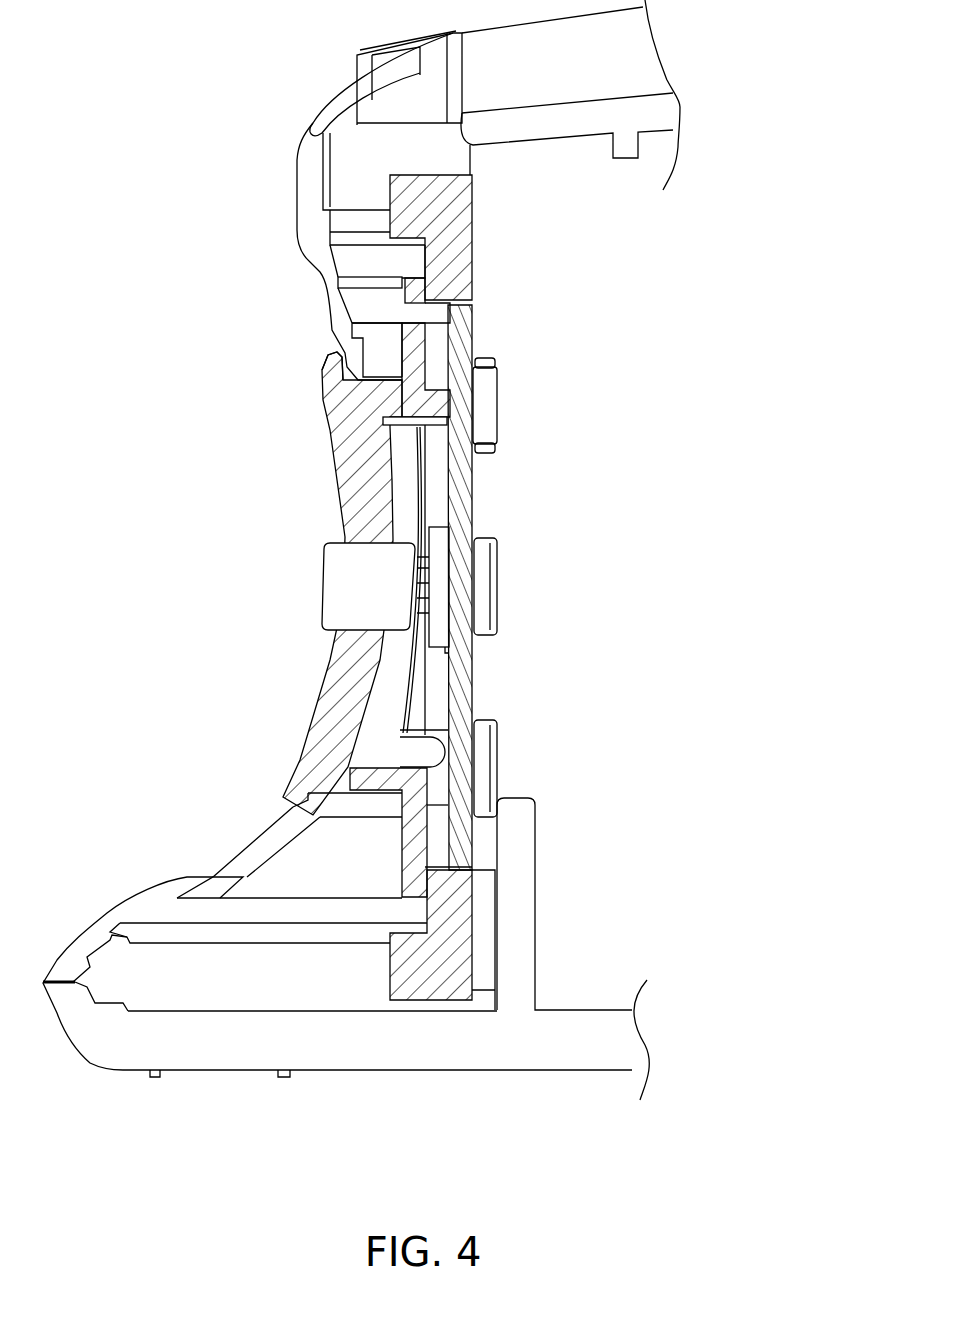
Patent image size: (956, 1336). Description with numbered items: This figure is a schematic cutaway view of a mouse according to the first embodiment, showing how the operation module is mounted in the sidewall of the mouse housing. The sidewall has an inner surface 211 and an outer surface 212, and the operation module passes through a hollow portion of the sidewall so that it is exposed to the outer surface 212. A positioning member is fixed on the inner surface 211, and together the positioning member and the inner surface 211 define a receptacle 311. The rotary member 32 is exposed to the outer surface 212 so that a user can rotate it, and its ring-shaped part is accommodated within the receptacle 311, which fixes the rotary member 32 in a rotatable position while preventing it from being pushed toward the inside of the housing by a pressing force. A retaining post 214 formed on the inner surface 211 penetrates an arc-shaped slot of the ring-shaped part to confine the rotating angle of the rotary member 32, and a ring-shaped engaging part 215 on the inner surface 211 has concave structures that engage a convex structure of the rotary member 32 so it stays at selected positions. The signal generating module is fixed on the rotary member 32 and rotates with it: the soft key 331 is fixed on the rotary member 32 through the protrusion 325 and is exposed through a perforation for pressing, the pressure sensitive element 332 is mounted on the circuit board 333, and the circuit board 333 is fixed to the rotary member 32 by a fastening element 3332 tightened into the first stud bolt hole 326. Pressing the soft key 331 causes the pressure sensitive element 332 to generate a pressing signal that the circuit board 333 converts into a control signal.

The inner surface 211 is at (370, 133).
The outer surface 212 is at (302, 252).
The retaining post 214 is at (415, 320).
The ring-shaped engaging part 215 is at (415, 253).
The receptacle 311 is at (383, 343).
The rotary member 32 is at (355, 468).
The protrusion 325 is at (418, 745).
The first stud bolt hole 326 is at (433, 792).
The soft key 331 is at (362, 585).
The pressure sensitive element 332 is at (440, 585).
The circuit board 333 is at (455, 490).
The fastening element 3332 is at (483, 763).